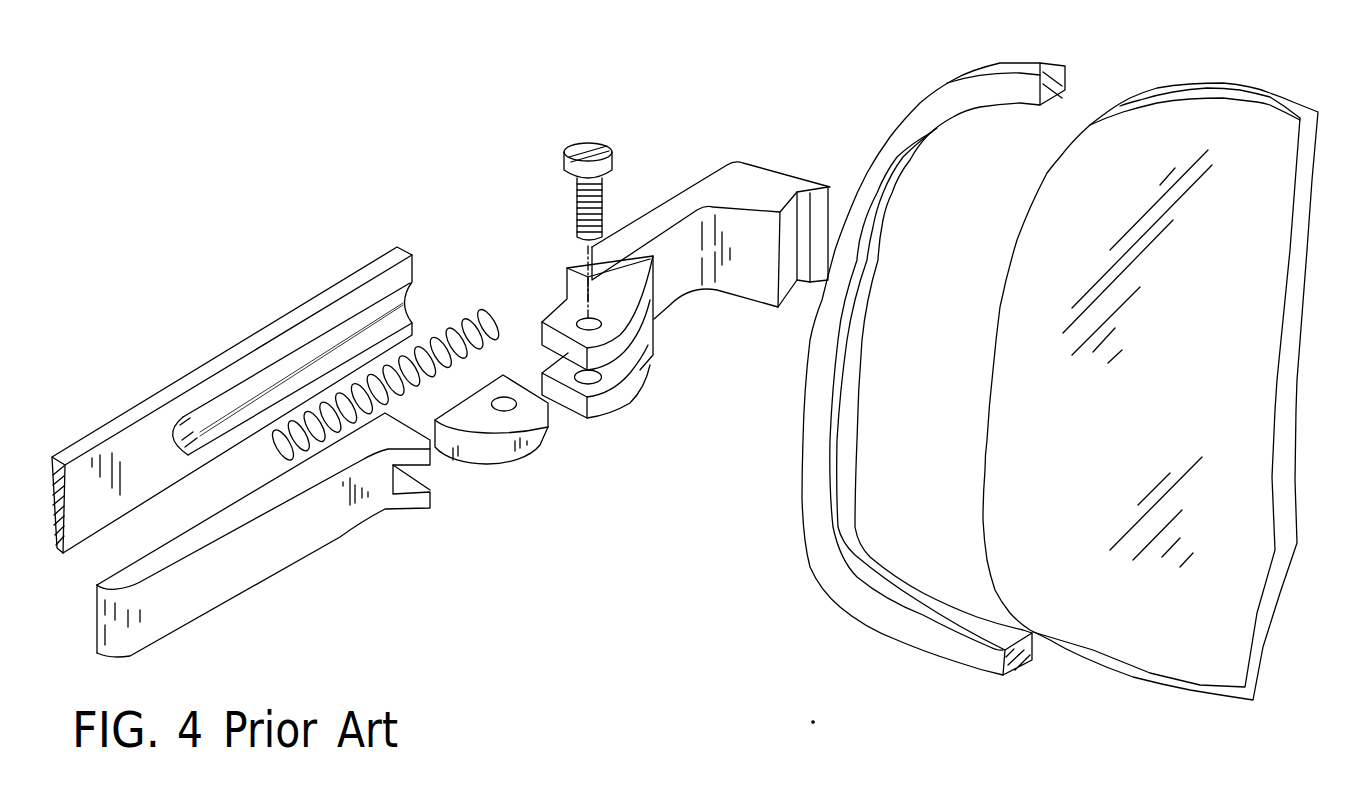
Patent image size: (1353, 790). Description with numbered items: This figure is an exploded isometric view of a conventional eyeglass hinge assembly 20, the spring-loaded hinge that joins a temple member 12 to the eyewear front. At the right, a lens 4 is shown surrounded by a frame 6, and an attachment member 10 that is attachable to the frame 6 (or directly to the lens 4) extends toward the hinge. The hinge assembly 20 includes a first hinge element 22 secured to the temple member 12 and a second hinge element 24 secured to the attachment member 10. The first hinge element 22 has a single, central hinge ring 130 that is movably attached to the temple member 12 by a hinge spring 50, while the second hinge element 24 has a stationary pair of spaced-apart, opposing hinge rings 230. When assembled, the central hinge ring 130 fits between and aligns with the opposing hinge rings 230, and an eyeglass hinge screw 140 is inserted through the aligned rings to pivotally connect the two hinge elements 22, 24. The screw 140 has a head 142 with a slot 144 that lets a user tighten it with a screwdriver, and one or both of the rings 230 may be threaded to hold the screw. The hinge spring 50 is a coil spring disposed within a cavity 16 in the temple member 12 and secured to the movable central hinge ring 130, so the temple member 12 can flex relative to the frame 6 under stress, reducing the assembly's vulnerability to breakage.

The lens 4 is at (1223, 133).
The frame 6 is at (993, 88).
The attachment member 10 is at (750, 173).
The temple member 12 is at (198, 368).
The cavity 16 is at (355, 322).
The eyeglass hinge assembly 20 is at (642, 599).
The first hinge element 22 is at (275, 538).
The second hinge element 24 is at (645, 333).
The hinge spring 50 is at (497, 323).
The single, central hinge ring 130 is at (532, 443).
The eyeglass hinge screw 140 is at (552, 168).
The head 142 is at (617, 152).
The slot 144 is at (579, 147).
The pair of spaced-apart, opposing hinge rings 230 is at (598, 360).